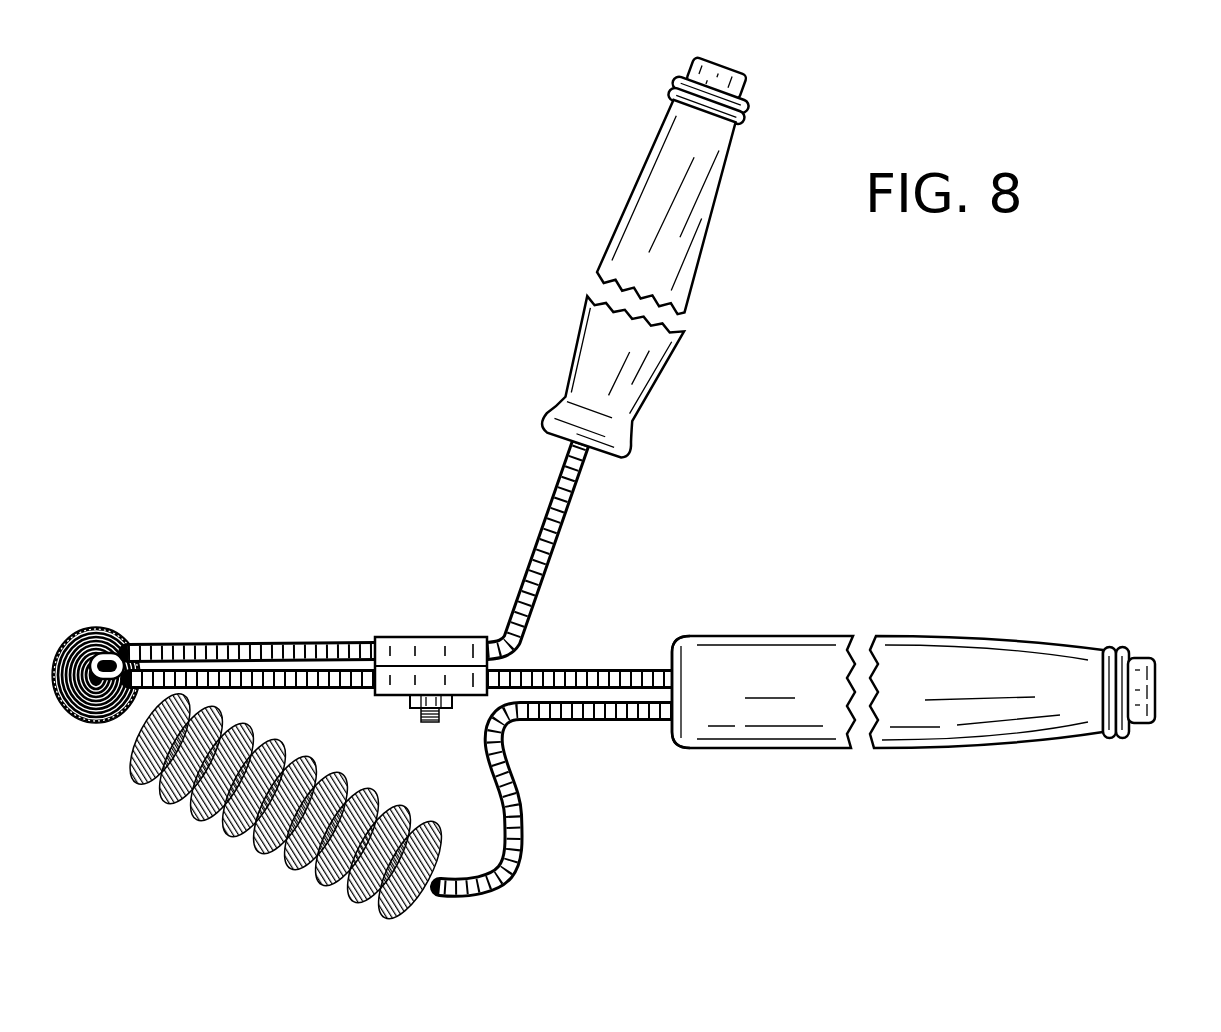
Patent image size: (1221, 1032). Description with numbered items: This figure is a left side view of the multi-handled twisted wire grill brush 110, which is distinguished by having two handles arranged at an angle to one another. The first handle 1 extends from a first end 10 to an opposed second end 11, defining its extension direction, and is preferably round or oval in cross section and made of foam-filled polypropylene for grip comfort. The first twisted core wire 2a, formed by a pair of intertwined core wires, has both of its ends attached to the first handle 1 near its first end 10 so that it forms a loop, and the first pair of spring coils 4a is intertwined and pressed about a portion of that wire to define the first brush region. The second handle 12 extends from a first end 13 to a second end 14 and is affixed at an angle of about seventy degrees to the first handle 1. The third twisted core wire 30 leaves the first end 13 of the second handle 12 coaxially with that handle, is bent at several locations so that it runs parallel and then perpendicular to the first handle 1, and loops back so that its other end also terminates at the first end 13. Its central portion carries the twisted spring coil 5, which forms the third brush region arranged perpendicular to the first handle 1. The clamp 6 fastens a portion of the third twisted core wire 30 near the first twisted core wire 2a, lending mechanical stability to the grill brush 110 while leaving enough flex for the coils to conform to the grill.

The first handle 1 is at (931, 667).
The first twisted core wire 2a is at (287, 690).
The first pair of spring coils 4a is at (210, 813).
The twisted spring coil 5 is at (53, 650).
The clamp 6 is at (426, 636).
The first end of handle 10 is at (668, 650).
The second end of handle 11 is at (1155, 693).
The second handle 12 is at (610, 297).
The first end of second handle 13 is at (562, 442).
The second end of second handle 14 is at (720, 60).
The third twisted core wire 30 is at (280, 643).
The multi-handled twisted wire grill brush 110 is at (357, 497).